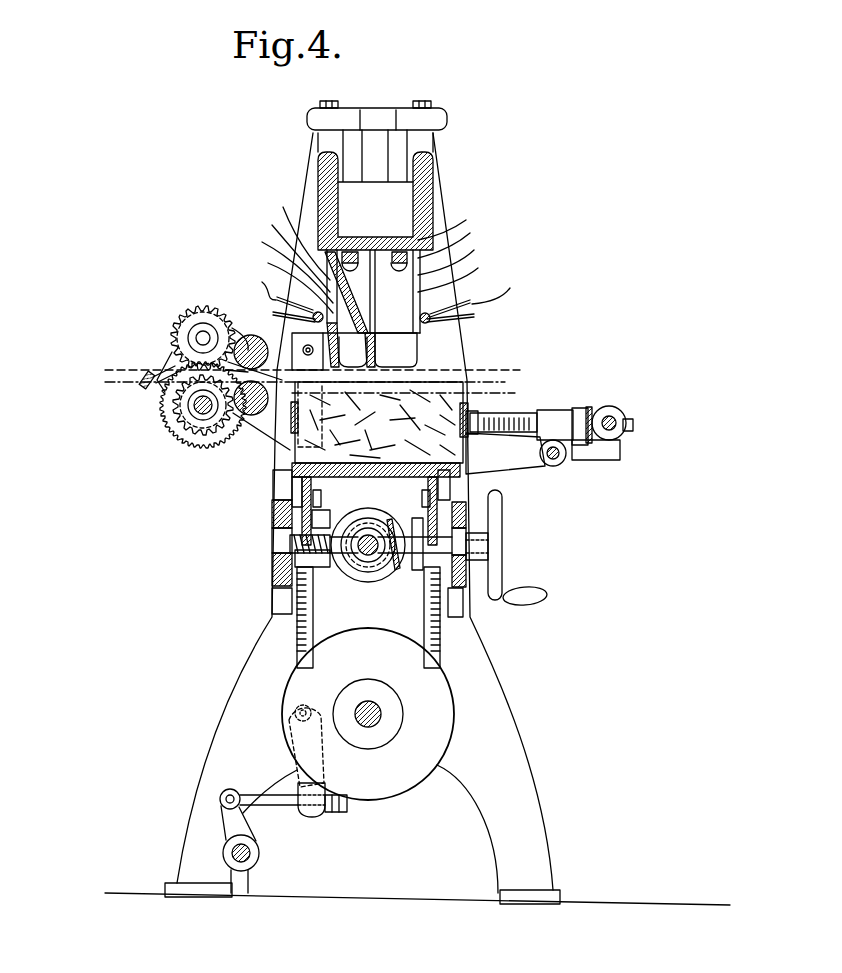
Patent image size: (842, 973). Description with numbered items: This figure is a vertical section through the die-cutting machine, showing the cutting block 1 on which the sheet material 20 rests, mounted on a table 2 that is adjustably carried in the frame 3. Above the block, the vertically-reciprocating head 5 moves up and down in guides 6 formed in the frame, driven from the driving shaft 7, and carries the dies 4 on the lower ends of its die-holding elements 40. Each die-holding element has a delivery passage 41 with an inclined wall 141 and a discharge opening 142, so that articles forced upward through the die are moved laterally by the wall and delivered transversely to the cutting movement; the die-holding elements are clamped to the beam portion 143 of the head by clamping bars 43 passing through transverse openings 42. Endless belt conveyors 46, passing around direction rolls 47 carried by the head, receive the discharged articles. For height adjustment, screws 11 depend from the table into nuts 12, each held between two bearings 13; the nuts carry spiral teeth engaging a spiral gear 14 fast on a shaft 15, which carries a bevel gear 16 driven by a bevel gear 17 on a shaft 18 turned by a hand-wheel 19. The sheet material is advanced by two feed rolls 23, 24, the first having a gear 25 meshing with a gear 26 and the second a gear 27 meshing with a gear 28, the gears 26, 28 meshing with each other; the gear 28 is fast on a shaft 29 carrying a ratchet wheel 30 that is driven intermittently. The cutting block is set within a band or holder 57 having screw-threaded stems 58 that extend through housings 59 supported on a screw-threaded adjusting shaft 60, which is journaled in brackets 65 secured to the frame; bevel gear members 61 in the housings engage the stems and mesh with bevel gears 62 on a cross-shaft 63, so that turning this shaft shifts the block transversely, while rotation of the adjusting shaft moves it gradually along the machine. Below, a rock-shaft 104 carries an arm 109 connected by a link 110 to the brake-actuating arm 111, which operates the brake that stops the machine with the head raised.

The cutting block 1 is at (443, 390).
The table 2 is at (352, 474).
The frame 3 is at (470, 657).
The dies 4 is at (420, 347).
The vertically-reciprocating head 5 is at (398, 268).
The guides 6 is at (407, 152).
The driving shaft 7 is at (378, 712).
The screws 11 is at (300, 622).
The nuts 12 is at (290, 537).
The bearings 13 is at (287, 522).
The spiral gear 14 is at (362, 583).
The shaft 15 is at (364, 552).
The bevel gear 16 is at (381, 575).
The bevel gear 17 is at (390, 523).
The shaft 18 is at (397, 532).
The hand-wheel 19 is at (500, 520).
The sheet material 20 is at (122, 370).
The feed roll 23 is at (219, 353).
The feed roll 24 is at (207, 432).
The gear 25 is at (252, 335).
The gear 26 is at (192, 310).
The gear 27 is at (251, 418).
The gear 28 is at (187, 430).
The shaft 29 is at (196, 406).
The ratchet wheel 30 is at (163, 433).
The die-holding elements 40 is at (373, 253).
The delivery passage 41 is at (288, 280).
The transverse opening 42 is at (382, 243).
The clamping bar 43 is at (340, 263).
The endless belt conveyors 46 is at (381, 294).
The direction rolls 47 is at (323, 318).
The band or holder 57 is at (293, 432).
The screw-threaded stems 58 is at (517, 414).
The housings 59 is at (556, 410).
The screw-threaded adjusting shaft 60 is at (558, 461).
The bevel gear members 61 is at (580, 409).
The bevel gears 62 is at (611, 406).
The cross-shaft 63 is at (614, 421).
The brackets 65 is at (505, 453).
The rock-shaft 104 is at (243, 871).
The arm 109 is at (222, 822).
The link 110 is at (276, 802).
The brake-actuating arm 111 is at (300, 785).
The inclined wall 141 is at (358, 290).
The discharge opening 142 is at (279, 266).
The beam portion 143 is at (393, 237).